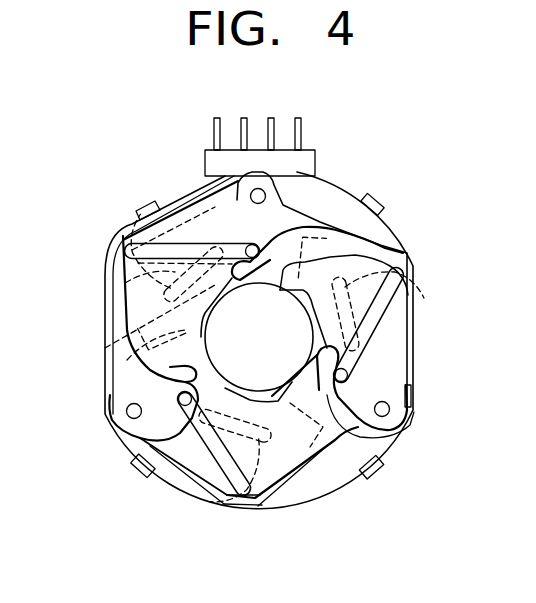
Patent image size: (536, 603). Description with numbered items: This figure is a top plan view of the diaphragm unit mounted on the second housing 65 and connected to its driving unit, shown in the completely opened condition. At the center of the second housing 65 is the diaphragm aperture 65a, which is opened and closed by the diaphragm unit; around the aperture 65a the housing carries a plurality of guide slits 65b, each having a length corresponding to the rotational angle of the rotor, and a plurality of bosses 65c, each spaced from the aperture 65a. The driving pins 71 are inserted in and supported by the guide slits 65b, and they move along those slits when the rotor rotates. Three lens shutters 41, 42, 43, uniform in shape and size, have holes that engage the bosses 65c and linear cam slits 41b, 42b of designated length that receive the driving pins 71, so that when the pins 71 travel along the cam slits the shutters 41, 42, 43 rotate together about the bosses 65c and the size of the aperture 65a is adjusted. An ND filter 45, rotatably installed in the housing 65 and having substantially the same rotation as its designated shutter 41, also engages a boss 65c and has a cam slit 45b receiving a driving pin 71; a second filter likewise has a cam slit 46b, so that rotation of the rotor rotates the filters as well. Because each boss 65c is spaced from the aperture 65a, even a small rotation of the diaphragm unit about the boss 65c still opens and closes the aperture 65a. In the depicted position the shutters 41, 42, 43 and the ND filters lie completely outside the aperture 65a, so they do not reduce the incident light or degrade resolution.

The lens shutter 41 is at (112, 245).
The cam slit 41b is at (150, 243).
The lens shutter 42 is at (408, 348).
The cam slit 42b is at (383, 300).
The lens shutter 43 is at (343, 447).
The ND filter 45 is at (127, 360).
The cam slit 45b is at (125, 283).
The cam slit 46b is at (268, 505).
The second housing 65 is at (326, 188).
The diaphragm aperture 65a is at (380, 242).
The guide slit 65b is at (122, 318).
The boss 65c is at (262, 190).
The driving pin 71 is at (222, 238).